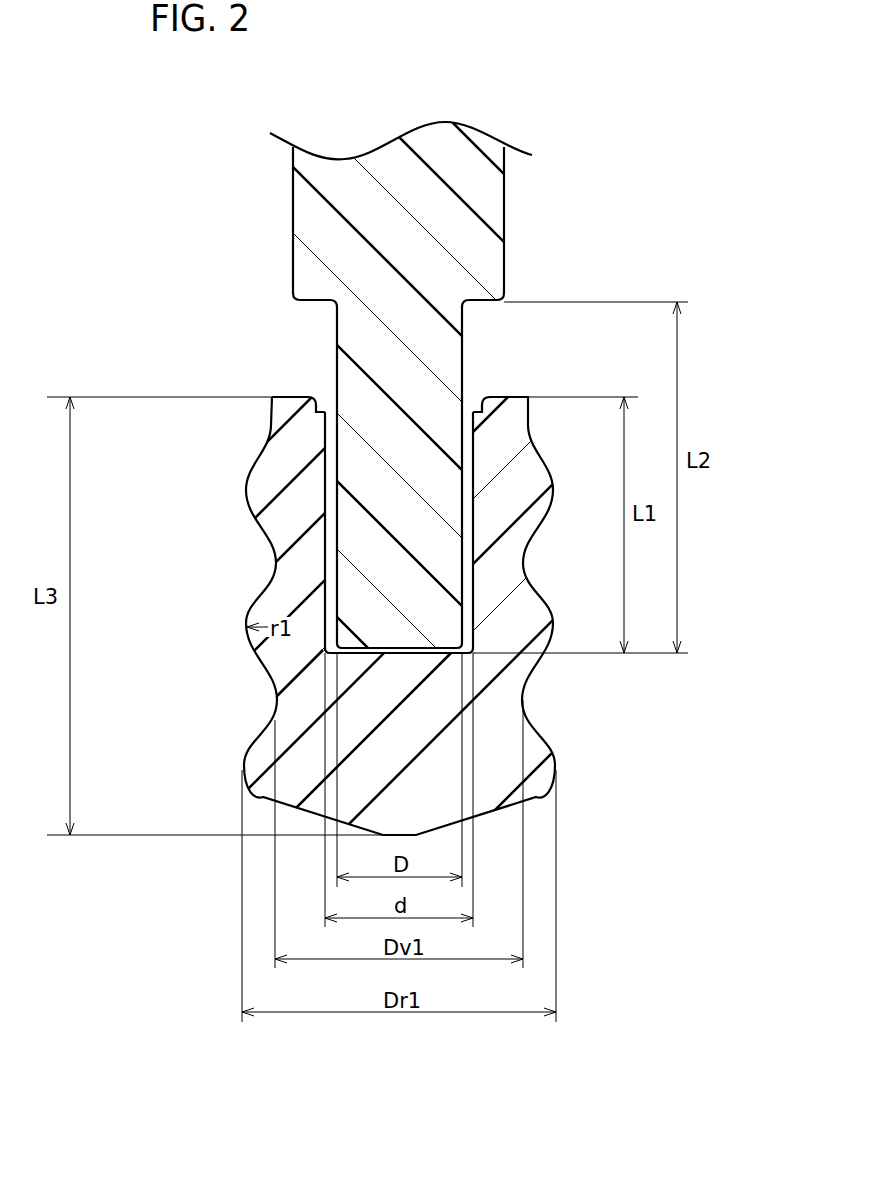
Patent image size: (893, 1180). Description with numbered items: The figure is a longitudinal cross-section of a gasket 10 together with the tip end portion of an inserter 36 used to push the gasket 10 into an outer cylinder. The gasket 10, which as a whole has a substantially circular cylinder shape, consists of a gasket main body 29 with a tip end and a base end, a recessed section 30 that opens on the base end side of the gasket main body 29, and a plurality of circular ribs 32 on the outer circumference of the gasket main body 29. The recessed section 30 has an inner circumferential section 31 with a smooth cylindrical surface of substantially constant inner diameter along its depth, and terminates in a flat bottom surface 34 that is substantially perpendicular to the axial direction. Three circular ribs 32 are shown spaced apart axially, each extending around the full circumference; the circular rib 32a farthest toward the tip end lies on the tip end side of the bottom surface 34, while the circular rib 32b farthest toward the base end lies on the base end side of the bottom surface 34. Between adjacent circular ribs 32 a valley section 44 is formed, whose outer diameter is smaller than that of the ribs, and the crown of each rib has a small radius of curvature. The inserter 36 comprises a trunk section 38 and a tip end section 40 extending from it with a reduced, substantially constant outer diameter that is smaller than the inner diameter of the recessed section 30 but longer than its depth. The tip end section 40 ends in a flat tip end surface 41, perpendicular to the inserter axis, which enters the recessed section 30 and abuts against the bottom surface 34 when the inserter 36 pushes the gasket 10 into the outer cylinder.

The gasket 10 is at (446, 600).
The gasket main body 29 is at (285, 438).
The recessed section 30 is at (328, 431).
The inner circumferential section 31 is at (471, 431).
The circular rib 32 is at (246, 630).
The circular rib farthest on the tip end side 32a is at (247, 770).
The circular rib farthest on the base end side 32b is at (246, 492).
The bottom surface 34 is at (397, 648).
The inserter 36 is at (446, 400).
The trunk section 38 is at (322, 243).
The tip end section 40 is at (352, 566).
The tip end surface 41 is at (425, 655).
The valley section 44 is at (524, 565).